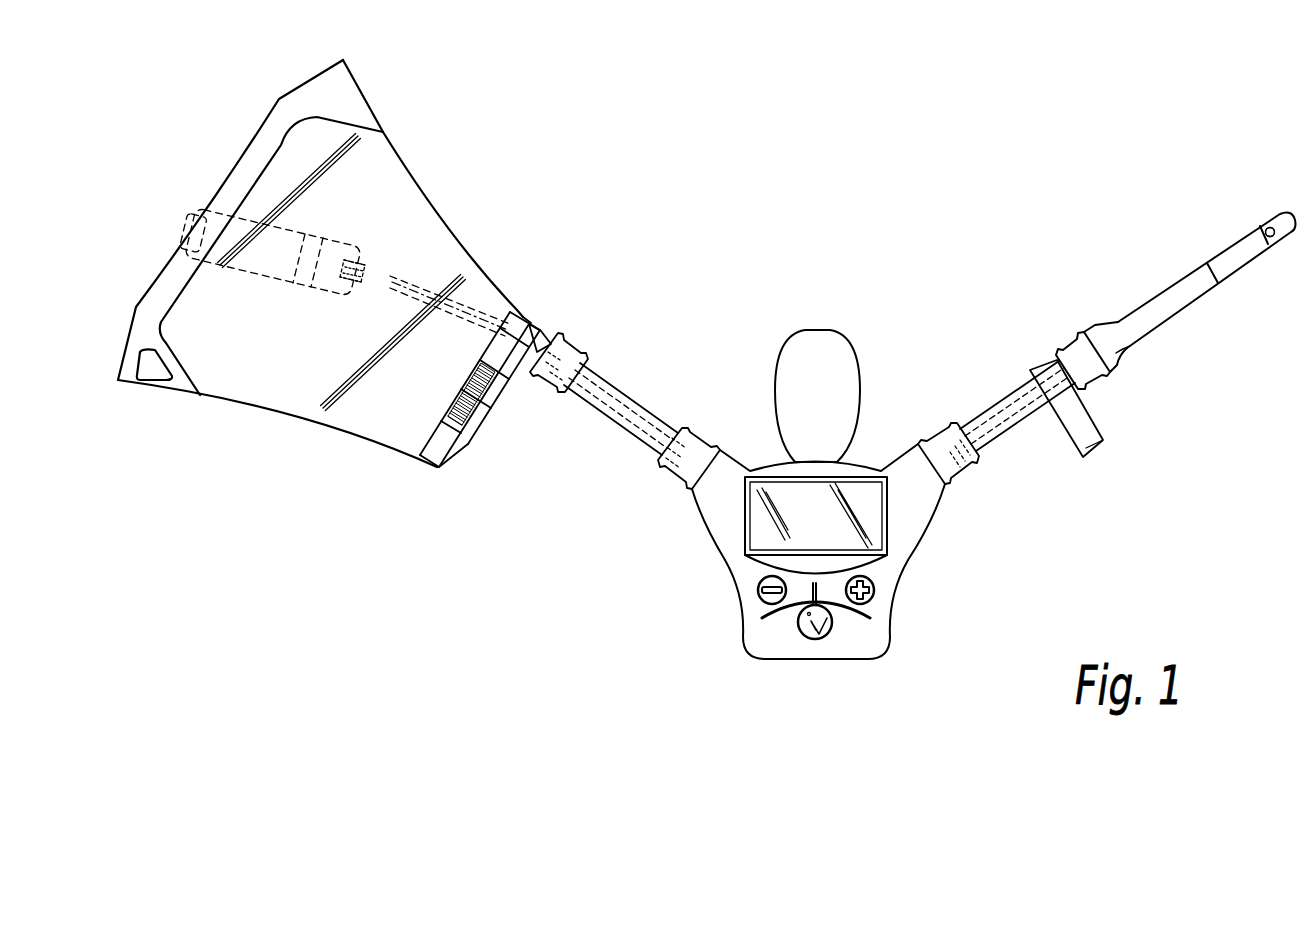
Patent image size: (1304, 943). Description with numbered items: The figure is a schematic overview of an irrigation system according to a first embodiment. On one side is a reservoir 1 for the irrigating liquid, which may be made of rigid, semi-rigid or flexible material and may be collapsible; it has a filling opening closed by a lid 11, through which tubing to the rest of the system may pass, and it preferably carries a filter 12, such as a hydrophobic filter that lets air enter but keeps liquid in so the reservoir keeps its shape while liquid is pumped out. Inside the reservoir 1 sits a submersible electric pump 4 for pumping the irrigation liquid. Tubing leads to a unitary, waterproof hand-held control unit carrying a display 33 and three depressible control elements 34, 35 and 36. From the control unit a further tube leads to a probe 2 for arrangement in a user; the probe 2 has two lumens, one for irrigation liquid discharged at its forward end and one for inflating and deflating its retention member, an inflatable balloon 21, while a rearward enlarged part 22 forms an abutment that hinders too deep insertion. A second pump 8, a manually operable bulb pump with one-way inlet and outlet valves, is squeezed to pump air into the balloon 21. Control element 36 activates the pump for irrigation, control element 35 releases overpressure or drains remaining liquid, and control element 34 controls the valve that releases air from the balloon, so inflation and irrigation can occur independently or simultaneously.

The reservoir 1 is at (312, 380).
The probe 2 is at (1178, 285).
The electric pump 4 is at (297, 227).
The second pump 8 is at (808, 362).
The lid 11 is at (428, 452).
The filter 12 is at (492, 399).
The inflatable balloon 21 is at (1283, 230).
The rearward enlarged part 22 is at (1120, 347).
The display 33 is at (852, 510).
The control element 34 is at (829, 638).
The control element 35 is at (758, 592).
The control element 36 is at (874, 588).